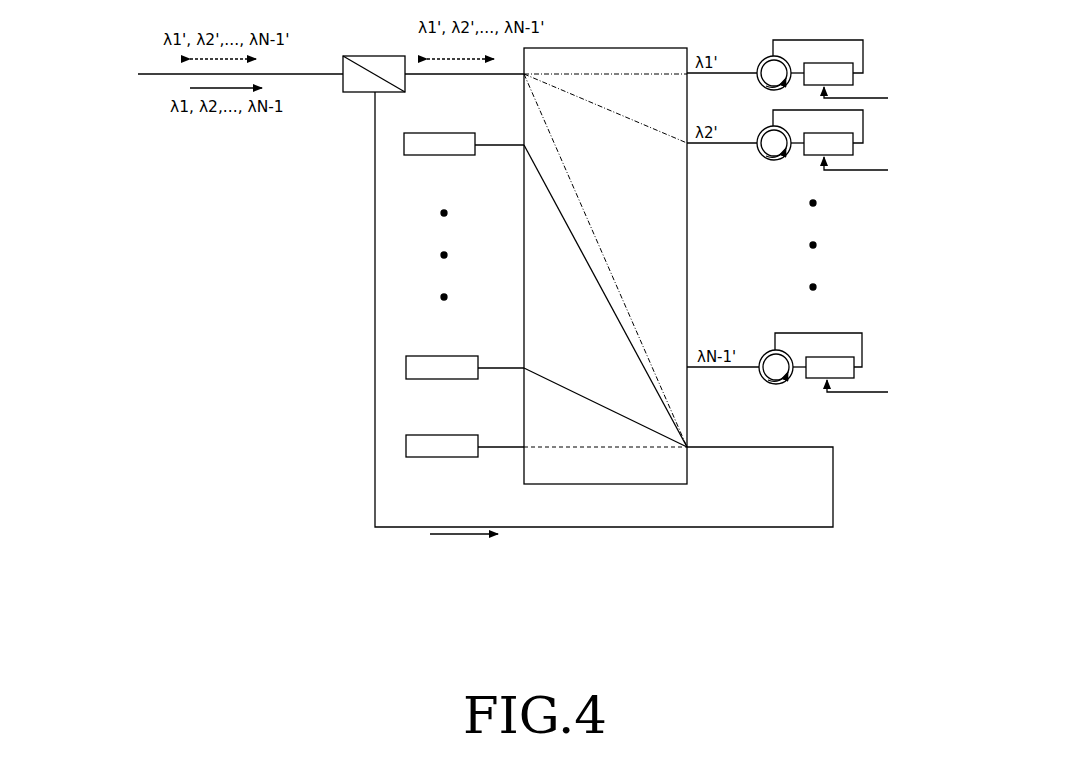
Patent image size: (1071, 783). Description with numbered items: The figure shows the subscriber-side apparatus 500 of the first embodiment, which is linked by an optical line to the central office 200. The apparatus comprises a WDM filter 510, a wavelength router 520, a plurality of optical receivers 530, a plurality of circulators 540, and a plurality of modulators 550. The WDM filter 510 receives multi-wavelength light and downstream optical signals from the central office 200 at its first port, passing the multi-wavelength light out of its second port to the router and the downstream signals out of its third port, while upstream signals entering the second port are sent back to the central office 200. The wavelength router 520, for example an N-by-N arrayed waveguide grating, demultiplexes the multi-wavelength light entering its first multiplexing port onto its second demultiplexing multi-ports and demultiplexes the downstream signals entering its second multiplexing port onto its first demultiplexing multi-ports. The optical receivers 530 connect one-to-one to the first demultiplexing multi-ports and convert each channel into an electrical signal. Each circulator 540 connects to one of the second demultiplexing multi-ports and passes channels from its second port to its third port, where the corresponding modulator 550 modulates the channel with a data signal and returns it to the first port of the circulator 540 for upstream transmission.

The central office 200 is at (185, 76).
The subscriber-side apparatus 500 is at (508, 588).
The WDM filter 510 is at (347, 93).
The wavelength router 520 is at (687, 245).
The optical receivers 530 is at (430, 156).
The circulators 540 is at (763, 59).
The modulators 550 is at (853, 79).